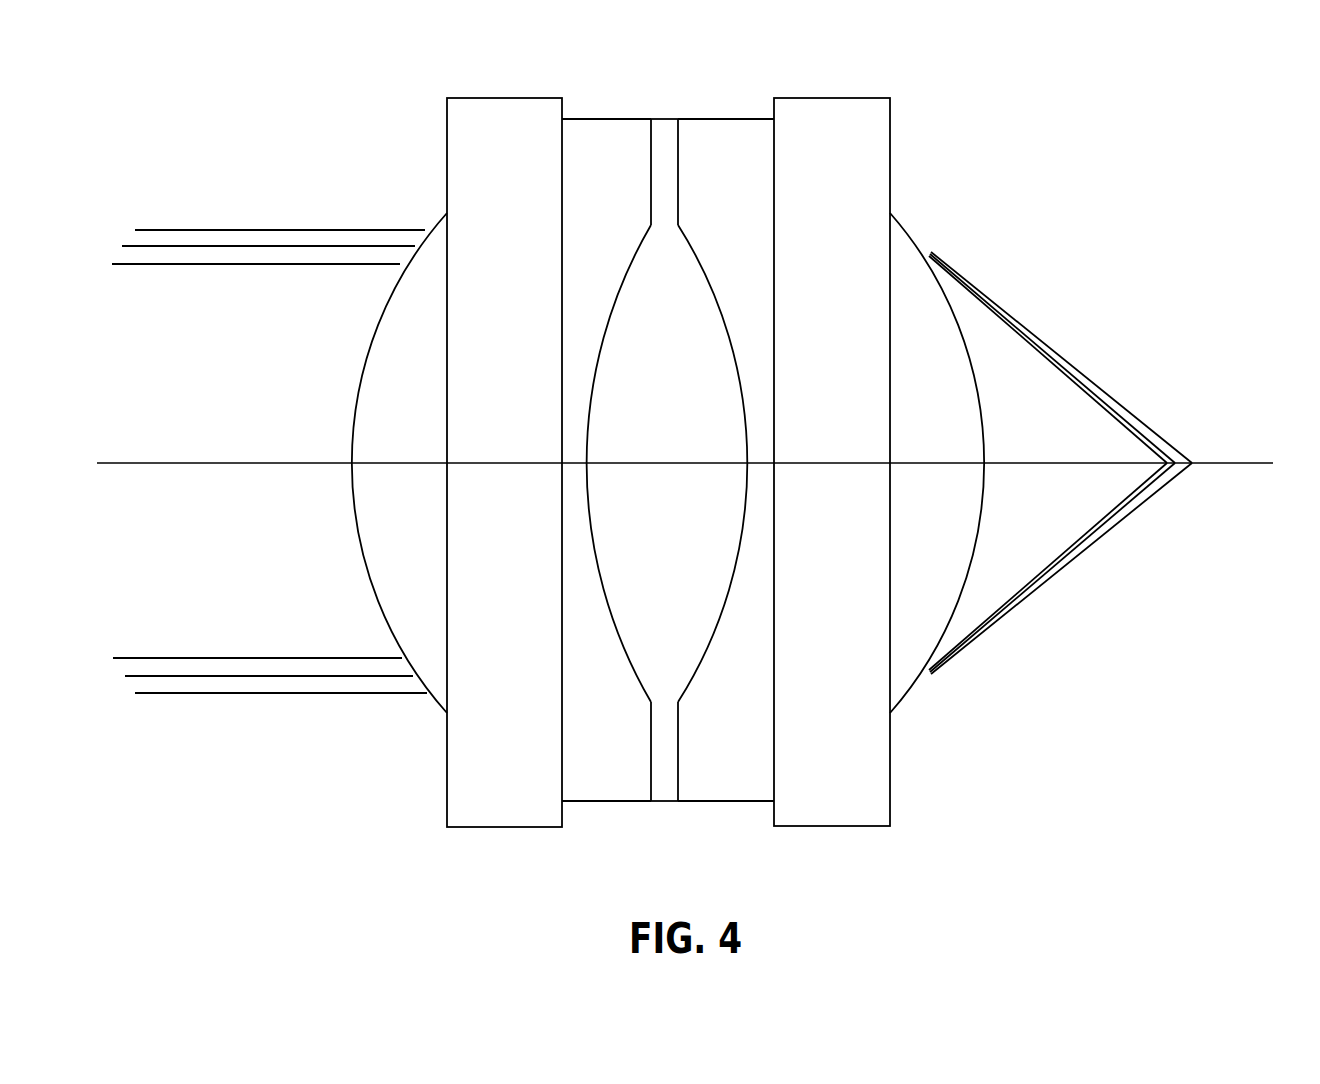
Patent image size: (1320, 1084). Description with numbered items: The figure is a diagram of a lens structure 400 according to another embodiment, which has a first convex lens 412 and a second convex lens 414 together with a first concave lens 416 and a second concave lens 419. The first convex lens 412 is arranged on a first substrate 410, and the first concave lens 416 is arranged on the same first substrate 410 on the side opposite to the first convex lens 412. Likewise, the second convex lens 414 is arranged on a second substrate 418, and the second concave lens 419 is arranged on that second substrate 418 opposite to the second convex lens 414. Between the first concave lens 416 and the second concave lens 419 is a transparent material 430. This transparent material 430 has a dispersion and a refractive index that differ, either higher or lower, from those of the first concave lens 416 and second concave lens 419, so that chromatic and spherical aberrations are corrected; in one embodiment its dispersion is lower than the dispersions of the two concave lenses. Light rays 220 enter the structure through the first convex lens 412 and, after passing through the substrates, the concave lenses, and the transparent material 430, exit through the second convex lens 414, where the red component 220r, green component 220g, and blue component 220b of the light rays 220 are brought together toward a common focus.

The lens structure 400 is at (1076, 111).
The light rays 220 is at (228, 229).
The first convex lens 412 is at (434, 395).
The first substrate 410 is at (540, 395).
The first concave lens 416 is at (635, 192).
The second concave lens 419 is at (760, 192).
The transparent material 430 is at (700, 395).
The second substrate 418 is at (865, 395).
The second convex lens 414 is at (963, 393).
The blue component 220b is at (1042, 346).
The red component 220r is at (1098, 392).
The green component 220g is at (1163, 438).